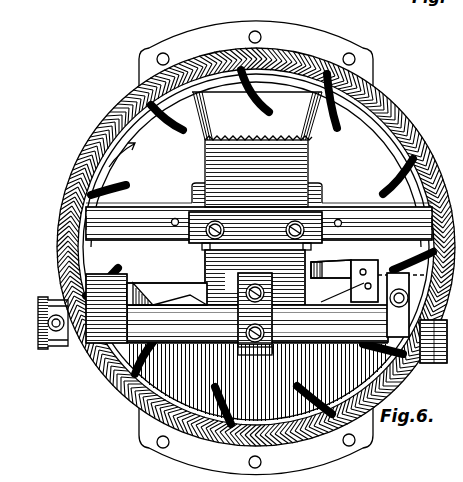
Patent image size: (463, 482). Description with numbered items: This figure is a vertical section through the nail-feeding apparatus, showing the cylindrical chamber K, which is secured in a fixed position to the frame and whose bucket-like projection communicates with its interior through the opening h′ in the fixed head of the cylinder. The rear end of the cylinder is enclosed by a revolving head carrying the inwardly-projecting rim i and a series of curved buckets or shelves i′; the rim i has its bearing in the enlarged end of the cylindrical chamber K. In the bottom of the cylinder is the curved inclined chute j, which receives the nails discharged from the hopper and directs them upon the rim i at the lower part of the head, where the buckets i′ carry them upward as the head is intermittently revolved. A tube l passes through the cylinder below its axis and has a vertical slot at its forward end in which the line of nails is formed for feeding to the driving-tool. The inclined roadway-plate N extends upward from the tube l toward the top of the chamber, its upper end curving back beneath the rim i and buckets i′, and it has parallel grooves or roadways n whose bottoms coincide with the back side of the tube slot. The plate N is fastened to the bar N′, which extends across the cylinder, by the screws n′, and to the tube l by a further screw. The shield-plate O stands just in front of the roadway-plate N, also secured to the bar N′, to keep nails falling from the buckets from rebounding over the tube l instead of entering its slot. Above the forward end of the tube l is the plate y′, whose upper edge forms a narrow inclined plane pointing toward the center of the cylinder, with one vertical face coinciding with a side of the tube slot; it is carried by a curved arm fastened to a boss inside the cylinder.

The cylindrical chamber K is at (95, 150).
The inwardly-projecting rim i is at (72, 226).
The curved buckets i′ is at (259, 247).
The inclined plate N is at (259, 222).
The bar N′ is at (166, 204).
The grooves or roadways n is at (258, 134).
The screws n′ is at (255, 228).
The shield-plate O is at (257, 116).
The tube l is at (240, 318).
The opening h′ is at (167, 294).
The plate y′ is at (372, 298).
The curved inclined chute j is at (257, 382).